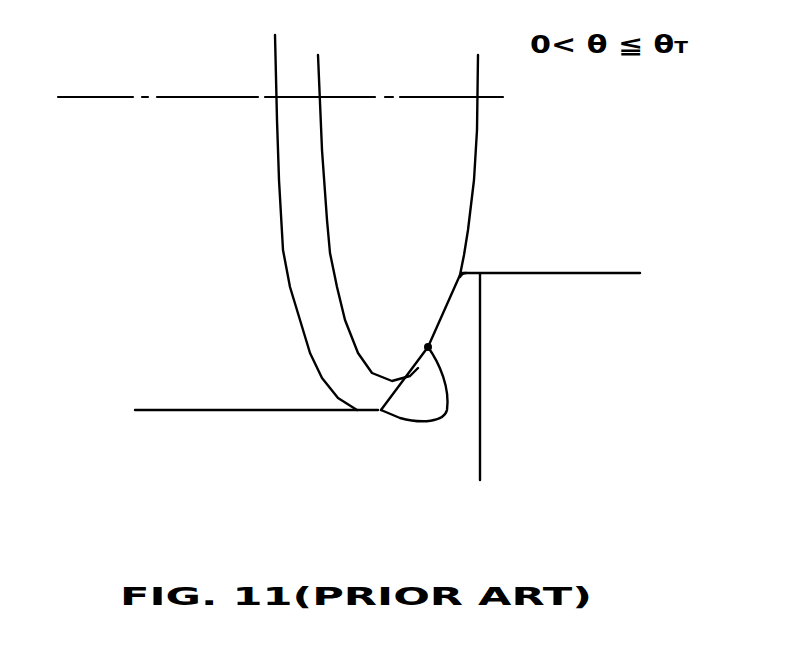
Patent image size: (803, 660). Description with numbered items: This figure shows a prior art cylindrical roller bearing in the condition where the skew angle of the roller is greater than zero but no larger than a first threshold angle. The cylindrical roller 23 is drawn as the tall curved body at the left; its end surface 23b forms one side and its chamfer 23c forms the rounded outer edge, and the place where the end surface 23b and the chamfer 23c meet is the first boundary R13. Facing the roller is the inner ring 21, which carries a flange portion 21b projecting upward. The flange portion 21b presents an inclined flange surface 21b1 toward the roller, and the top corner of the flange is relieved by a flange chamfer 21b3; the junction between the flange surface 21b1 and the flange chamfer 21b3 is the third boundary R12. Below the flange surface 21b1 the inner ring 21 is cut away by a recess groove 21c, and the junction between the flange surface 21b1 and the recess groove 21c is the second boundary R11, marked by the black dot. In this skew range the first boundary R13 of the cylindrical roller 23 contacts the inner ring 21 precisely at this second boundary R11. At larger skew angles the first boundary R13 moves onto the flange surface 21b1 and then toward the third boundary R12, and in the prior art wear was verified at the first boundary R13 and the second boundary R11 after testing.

The cylindrical roller 23 is at (173, 152).
The chamfer 23c is at (297, 216).
The end surface 23b is at (458, 141).
The first boundary R13 is at (328, 149).
The inner ring 21 is at (272, 469).
The flange portion 21b is at (605, 290).
The flange chamfer 21b3 is at (463, 275).
The flange surface 21b1 is at (452, 318).
The recess groove 21c is at (433, 418).
The second boundary R11 is at (444, 352).
The third boundary R12 is at (448, 274).